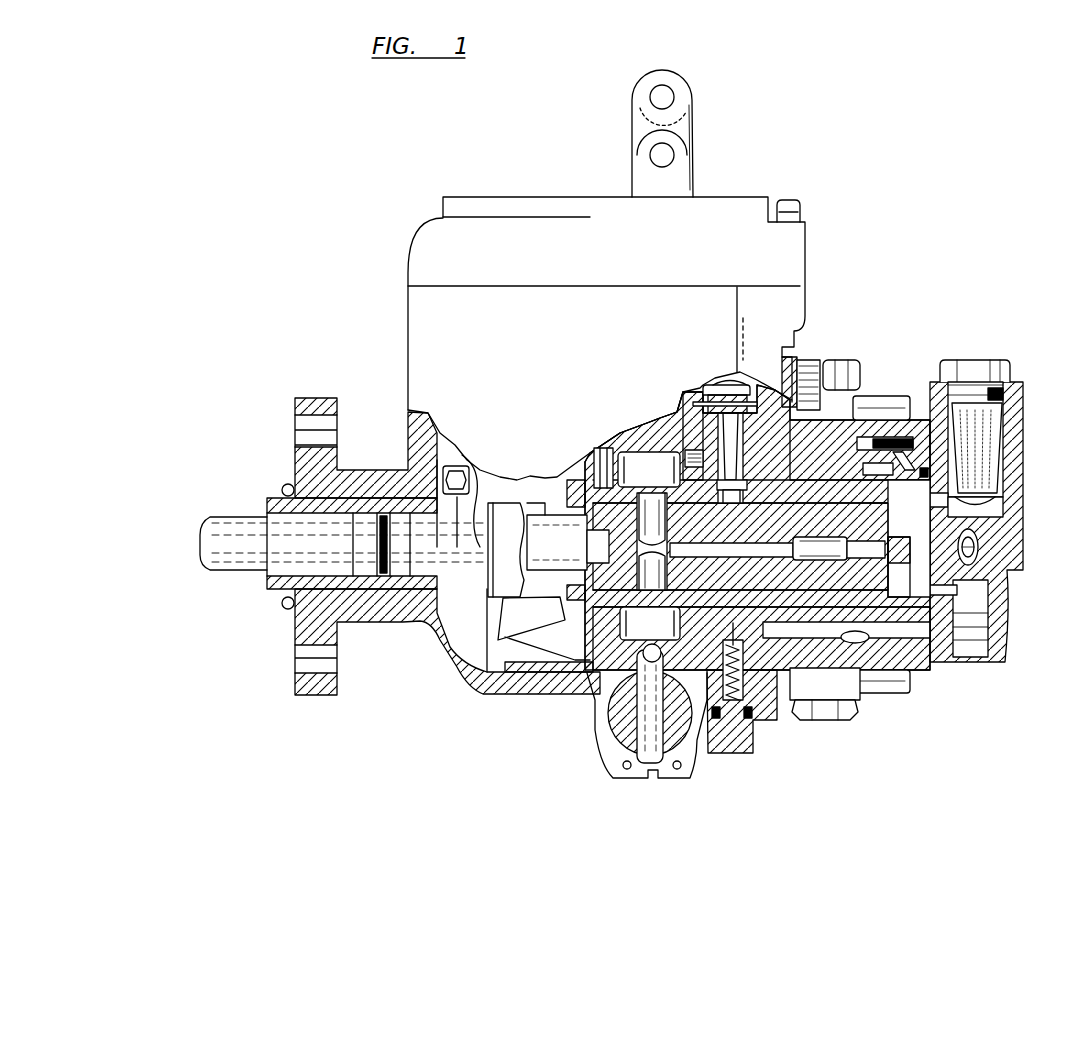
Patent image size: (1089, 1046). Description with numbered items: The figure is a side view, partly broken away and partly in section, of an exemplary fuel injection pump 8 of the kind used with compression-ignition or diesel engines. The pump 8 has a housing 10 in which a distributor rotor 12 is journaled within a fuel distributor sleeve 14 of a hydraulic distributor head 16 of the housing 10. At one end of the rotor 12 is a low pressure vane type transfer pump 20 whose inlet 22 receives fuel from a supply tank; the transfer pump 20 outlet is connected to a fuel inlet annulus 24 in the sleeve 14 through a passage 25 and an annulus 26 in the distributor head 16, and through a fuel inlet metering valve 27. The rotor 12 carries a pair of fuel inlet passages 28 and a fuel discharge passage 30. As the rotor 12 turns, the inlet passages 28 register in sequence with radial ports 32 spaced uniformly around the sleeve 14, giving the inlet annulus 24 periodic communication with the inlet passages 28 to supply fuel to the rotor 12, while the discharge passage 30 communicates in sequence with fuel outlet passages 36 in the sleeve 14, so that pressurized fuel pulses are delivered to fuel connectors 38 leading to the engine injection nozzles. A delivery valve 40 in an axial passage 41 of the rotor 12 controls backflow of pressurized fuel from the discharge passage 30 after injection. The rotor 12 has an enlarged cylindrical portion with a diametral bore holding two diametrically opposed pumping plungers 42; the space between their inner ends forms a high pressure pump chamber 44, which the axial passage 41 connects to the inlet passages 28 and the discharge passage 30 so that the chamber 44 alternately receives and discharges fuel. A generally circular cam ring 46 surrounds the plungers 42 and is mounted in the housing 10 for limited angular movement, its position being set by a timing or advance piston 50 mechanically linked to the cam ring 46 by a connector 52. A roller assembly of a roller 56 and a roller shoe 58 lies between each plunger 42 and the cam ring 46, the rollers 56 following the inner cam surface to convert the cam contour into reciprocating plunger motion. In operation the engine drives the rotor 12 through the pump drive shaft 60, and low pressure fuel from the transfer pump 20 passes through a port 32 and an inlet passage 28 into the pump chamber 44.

The fuel injection pump 8 is at (897, 232).
The housing 10 is at (410, 320).
The distributor rotor 12 is at (812, 533).
The fuel distributor sleeve 14 is at (848, 474).
The hydraulic distributor head 16 is at (938, 663).
The transfer pump 20 is at (915, 527).
The inlet 22 is at (958, 507).
The fuel inlet annulus 24 is at (693, 410).
The passage 25 is at (860, 648).
The annulus 26 is at (761, 631).
The fuel inlet metering valve 27 is at (741, 400).
The fuel inlet passages 28 is at (728, 508).
The fuel discharge passage 30 is at (837, 530).
The radial ports 32 is at (738, 600).
The fuel outlet passages 36 is at (806, 674).
The fuel connectors 38 is at (905, 393).
The delivery valve 40 is at (807, 560).
The axial passage 41 is at (672, 565).
The pumping plungers 42 is at (607, 541).
The high pressure pump chamber 44 is at (676, 523).
The cam ring 46 is at (635, 433).
The timing or advance piston 50 is at (605, 744).
The connector 52 is at (650, 763).
The roller 56 is at (592, 453).
The roller shoe 58 is at (638, 492).
The pump drive shaft 60 is at (246, 576).